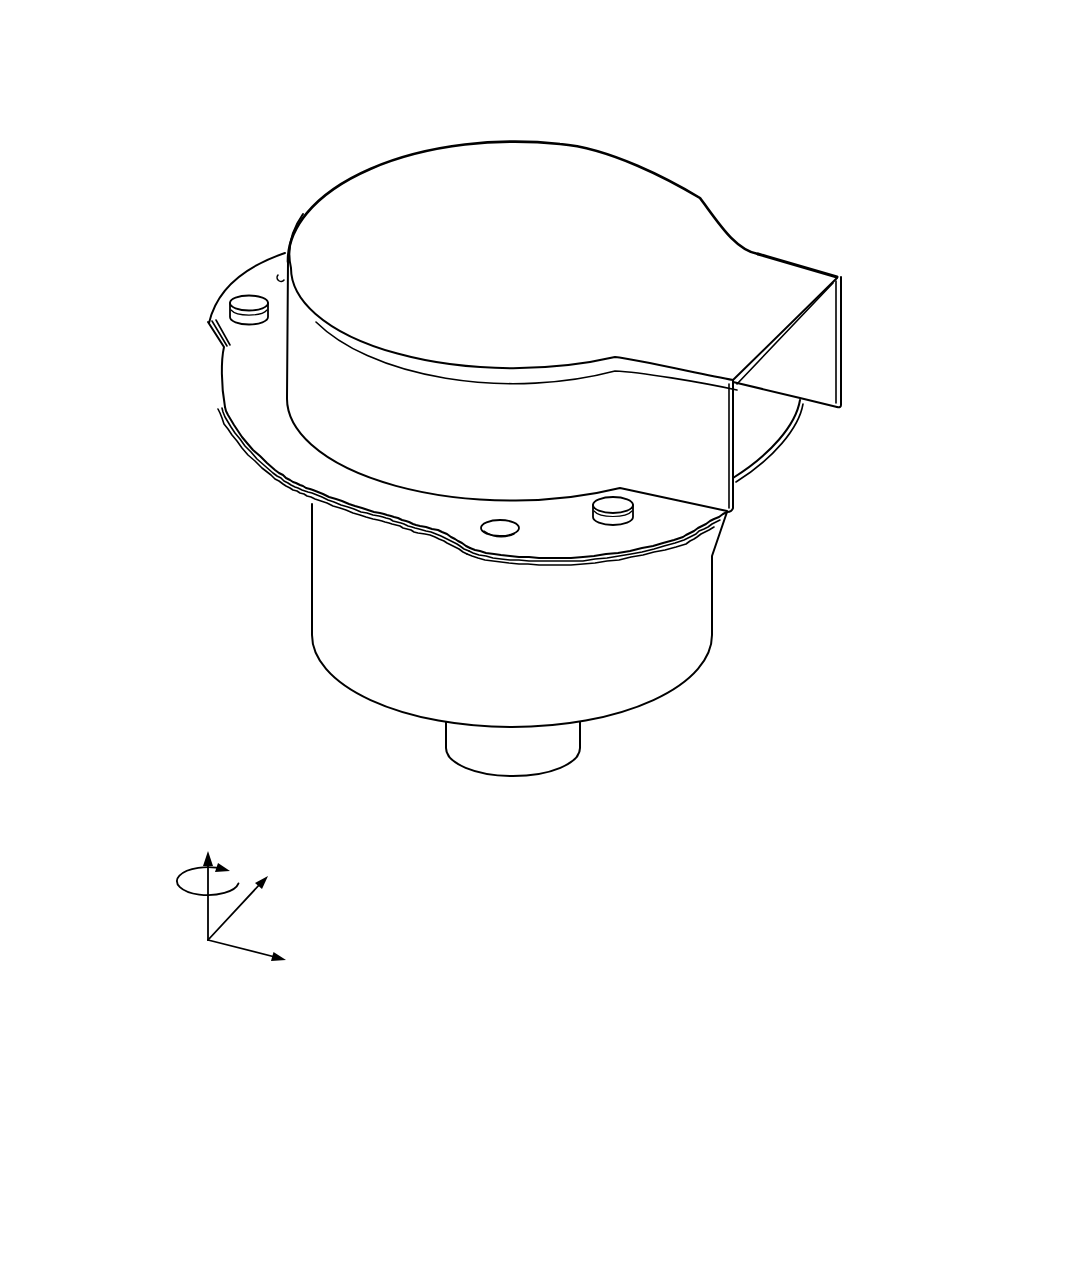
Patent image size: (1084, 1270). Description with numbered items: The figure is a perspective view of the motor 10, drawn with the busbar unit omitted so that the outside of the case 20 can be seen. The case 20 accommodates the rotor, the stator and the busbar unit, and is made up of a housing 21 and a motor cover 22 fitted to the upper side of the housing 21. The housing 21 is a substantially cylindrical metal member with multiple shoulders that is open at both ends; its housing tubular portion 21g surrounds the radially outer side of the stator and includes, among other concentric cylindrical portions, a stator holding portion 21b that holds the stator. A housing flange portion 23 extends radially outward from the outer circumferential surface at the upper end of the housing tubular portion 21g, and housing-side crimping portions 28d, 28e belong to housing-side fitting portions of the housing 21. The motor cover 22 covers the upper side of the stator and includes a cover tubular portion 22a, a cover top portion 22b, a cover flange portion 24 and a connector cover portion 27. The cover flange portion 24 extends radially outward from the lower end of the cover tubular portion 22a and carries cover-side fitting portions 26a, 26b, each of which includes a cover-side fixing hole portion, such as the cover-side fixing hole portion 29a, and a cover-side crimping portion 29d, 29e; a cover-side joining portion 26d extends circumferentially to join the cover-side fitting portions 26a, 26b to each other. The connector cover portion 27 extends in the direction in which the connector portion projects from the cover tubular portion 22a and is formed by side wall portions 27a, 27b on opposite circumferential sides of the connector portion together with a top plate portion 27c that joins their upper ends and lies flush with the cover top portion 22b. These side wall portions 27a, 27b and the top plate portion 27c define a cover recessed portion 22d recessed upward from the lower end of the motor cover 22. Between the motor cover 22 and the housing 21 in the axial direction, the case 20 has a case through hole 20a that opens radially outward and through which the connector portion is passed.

The motor 10 is at (493, 562).
The case 20 is at (493, 448).
The case through hole 20a is at (811, 451).
The housing 21 is at (464, 547).
The stator holding portion 21b is at (566, 624).
The housing tubular portion 21g is at (566, 624).
The motor cover 22 is at (518, 396).
The cover tubular portion 22a is at (492, 499).
The cover top portion 22b is at (562, 223).
The cover recessed portion 22d is at (828, 353).
The housing flange portion 23 is at (512, 696).
The cover flange portion 24 is at (452, 547).
The cover-side fitting portion 26a is at (597, 676).
The cover-side fitting portion 26b is at (224, 330).
The cover-side joining portion 26d is at (344, 543).
The connector cover portion 27 is at (802, 360).
The side wall portion 27a is at (752, 467).
The side wall portion 27b is at (879, 346).
The top plate portion 27c is at (785, 278).
The housing-side crimping portion 28d is at (658, 645).
The housing-side crimping portion 28e is at (188, 308).
The cover-side fixing hole portion 29a is at (425, 653).
The cover-side crimping portion 29d is at (658, 645).
The cover-side crimping portion 29e is at (188, 308).